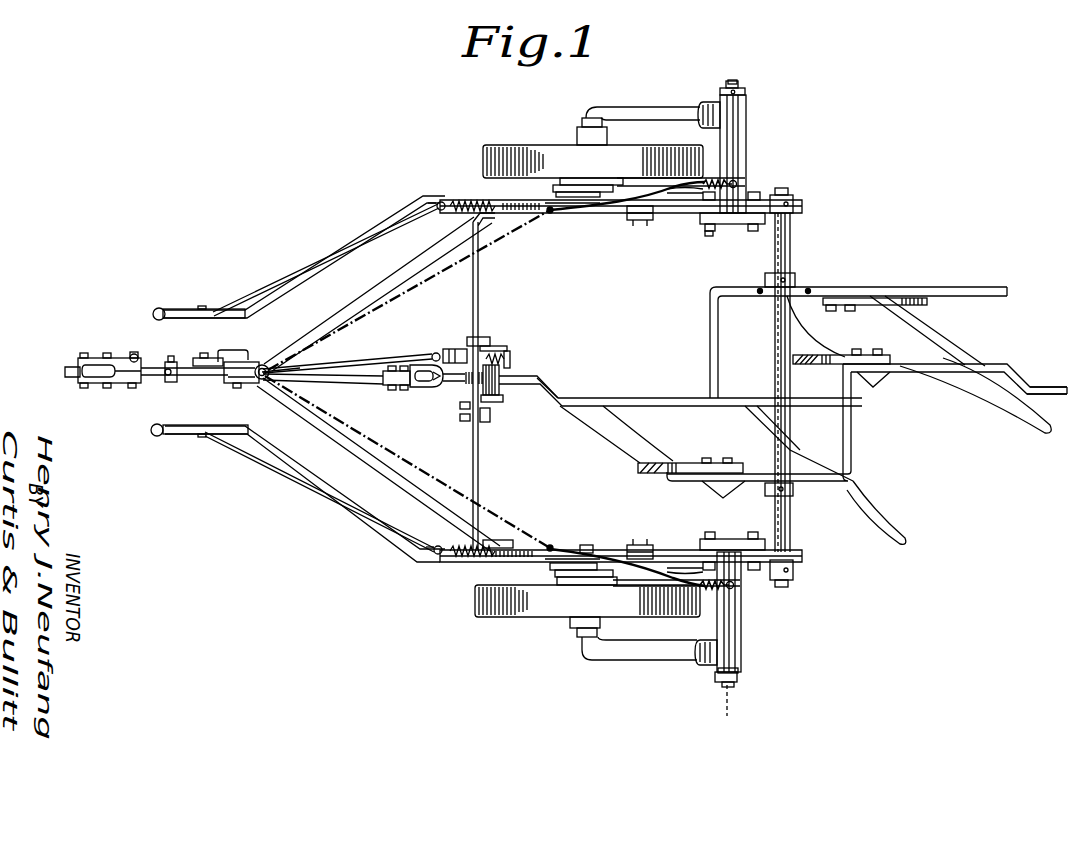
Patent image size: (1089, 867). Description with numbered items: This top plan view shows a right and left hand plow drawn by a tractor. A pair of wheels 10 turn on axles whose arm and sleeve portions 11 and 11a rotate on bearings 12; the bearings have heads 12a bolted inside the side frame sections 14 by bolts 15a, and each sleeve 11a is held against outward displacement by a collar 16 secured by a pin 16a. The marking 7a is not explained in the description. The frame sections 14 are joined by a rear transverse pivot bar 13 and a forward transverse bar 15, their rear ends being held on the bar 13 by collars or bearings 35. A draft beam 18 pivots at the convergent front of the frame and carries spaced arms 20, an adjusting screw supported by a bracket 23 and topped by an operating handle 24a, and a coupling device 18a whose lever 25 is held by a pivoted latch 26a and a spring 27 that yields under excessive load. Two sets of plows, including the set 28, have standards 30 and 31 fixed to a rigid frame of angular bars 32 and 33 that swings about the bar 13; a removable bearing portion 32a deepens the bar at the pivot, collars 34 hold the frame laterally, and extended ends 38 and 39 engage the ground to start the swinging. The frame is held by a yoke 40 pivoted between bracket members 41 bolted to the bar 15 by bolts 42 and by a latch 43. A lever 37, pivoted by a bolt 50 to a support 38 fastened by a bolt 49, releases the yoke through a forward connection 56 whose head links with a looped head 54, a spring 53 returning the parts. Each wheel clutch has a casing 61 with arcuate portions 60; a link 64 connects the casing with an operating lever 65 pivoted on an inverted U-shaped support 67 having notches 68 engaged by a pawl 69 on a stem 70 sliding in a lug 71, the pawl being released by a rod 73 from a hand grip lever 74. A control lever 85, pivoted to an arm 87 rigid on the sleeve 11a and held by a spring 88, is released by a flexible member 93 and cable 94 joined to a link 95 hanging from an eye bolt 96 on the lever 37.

The axle post 7a is at (788, 512).
The wheels 10 is at (522, 150).
The arm portion of axle 11 is at (643, 108).
The sleeve portion of axle 11a is at (747, 135).
The bearings 12 is at (740, 86).
The heads of sleeve bearings 12a is at (752, 232).
The transverse bar 13 is at (793, 258).
The main frame sections 14 is at (392, 278).
The forward transverse bar 15 is at (482, 285).
The bolts 15a is at (709, 236).
The collar 16 is at (746, 95).
The pin 16a is at (731, 82).
The draft beam 18 is at (363, 381).
The coupling device 18a is at (132, 387).
The spaced arms 20 is at (411, 388).
The bracket 23 is at (443, 388).
The operating handle 24a is at (456, 384).
The lever 25 is at (65, 370).
The pivoted latch 26a is at (108, 384).
The spring 27 is at (130, 356).
The set of plows 28 is at (1022, 425).
The short beams or standards 30 is at (930, 304).
The short beams or standards 31 is at (832, 364).
The angular shaped bar 32 is at (712, 352).
The removable bearing portion 32a is at (760, 287).
The angular shaped bar 33 is at (852, 440).
The collars 34 is at (797, 280).
The collars or bearings 35 is at (793, 203).
The lever 37 is at (249, 359).
The extended end portion 38 is at (185, 360).
The extended end portion 39 is at (1058, 385).
The yoke-shaped member 40 is at (530, 379).
The bracket members 41 is at (500, 404).
The bolts 42 is at (492, 340).
The latch member 43 is at (512, 372).
The bolt 49 is at (165, 362).
The bolt 50 is at (215, 357).
The spring 53 is at (510, 358).
The looped head 54 is at (437, 353).
The forwardly extending connection 56 is at (385, 364).
The arcuate portions of casing 60 is at (603, 178).
The casing 61 is at (616, 220).
The link 64 is at (584, 548).
The operating lever 65 is at (344, 254).
The upstanding support 67 is at (566, 208).
The notches 68 is at (505, 202).
The pawl 69 is at (508, 540).
The stem 70 is at (441, 212).
The lug 71 is at (469, 201).
The operating rod 73 is at (405, 226).
The hand grip lever 74 is at (170, 312).
The control lever 85 is at (652, 178).
The arm 87 is at (688, 195).
The spring 88 is at (738, 183).
The flexible member 93 is at (662, 212).
The operating cable 94 is at (424, 284).
The link 95 is at (283, 370).
The eye bolt 96 is at (261, 381).